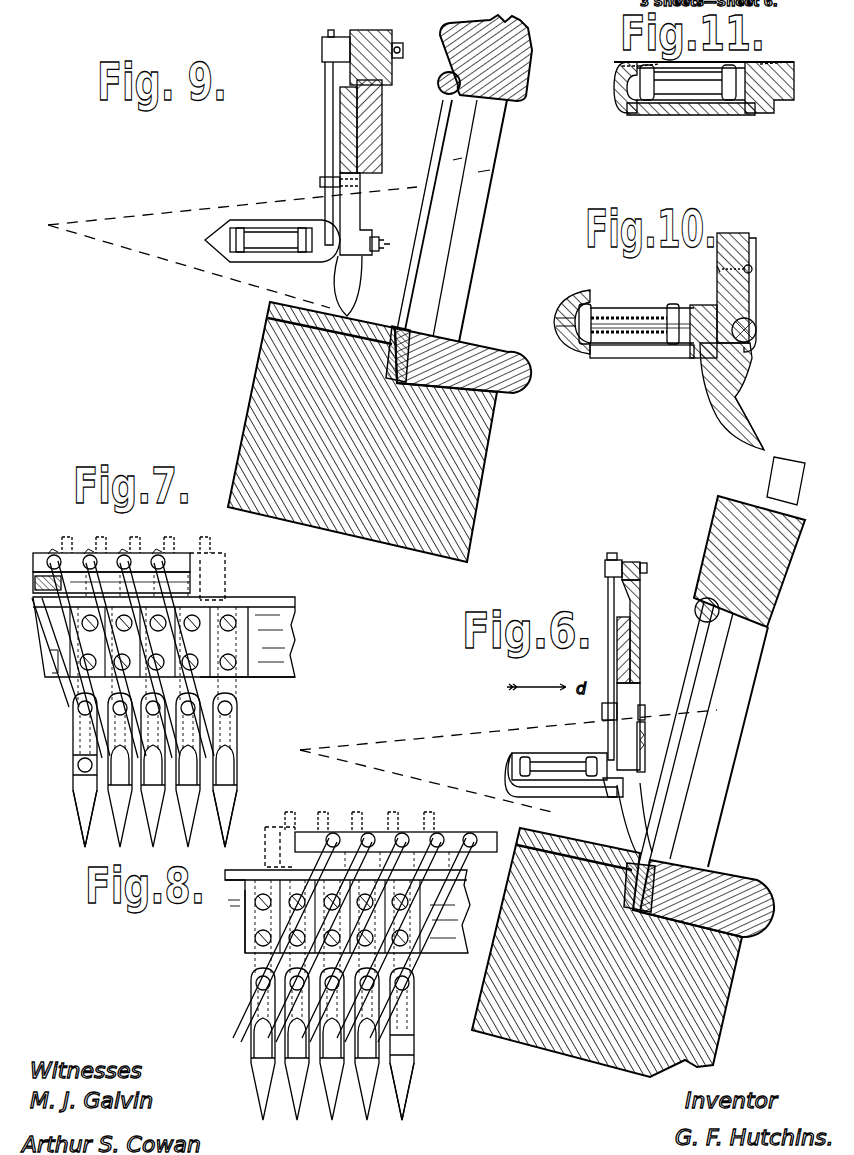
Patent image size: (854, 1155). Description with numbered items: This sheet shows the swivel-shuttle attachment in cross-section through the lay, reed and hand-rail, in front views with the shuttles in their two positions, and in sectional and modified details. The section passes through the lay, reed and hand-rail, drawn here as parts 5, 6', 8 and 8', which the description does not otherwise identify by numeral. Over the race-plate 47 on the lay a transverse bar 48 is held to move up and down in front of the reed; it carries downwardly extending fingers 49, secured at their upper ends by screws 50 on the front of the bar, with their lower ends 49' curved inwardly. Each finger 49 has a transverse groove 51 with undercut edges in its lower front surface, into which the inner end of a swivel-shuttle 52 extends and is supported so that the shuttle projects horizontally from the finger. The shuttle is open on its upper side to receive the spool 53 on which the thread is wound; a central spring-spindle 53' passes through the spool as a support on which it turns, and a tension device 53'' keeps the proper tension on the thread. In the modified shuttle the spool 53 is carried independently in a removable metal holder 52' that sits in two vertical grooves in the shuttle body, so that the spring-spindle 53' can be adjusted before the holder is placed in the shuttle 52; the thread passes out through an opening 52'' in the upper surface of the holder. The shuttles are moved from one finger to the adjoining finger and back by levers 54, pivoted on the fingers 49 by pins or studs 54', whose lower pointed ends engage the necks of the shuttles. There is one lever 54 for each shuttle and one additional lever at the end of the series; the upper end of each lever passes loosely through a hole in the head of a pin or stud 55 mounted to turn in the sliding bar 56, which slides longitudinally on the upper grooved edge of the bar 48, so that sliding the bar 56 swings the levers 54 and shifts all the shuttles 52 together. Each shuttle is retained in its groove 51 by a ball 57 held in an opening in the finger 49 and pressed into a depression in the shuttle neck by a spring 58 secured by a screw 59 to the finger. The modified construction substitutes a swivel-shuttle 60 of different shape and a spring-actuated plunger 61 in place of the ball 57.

In FIG. 9, the block 5 is at (478, 506).
In FIG. 6, the block 5 is at (712, 997).
In FIG. 9, the arm 6' is at (470, 221).
In FIG. 6, the arm 6' is at (722, 662).
In FIG. 9, the clamp head 8 is at (496, 58).
In FIG. 6, the clamp head 8 is at (746, 561).
In FIG. 9, the clamp bar 8' is at (458, 246).
In FIG. 6, the clamp bar 8' is at (699, 775).
In FIG. 9, the race-plate 47 is at (268, 306).
In FIG. 6, the race-plate 47 is at (533, 824).
In FIG. 9, the transverse bar 48 is at (383, 118).
In FIG. 7, the transverse bar 48 is at (260, 600).
In FIG. 8, the transverse bar 48 is at (268, 870).
In FIG. 6, the transverse bar 48 is at (639, 650).
In FIG. 9, the fingers 49 is at (372, 198).
In FIG. 10, the fingers 49 is at (748, 396).
In FIG. 7, the fingers 49 is at (138, 770).
In FIG. 8, the fingers 49 is at (356, 1049).
In FIG. 6, the fingers 49 is at (648, 693).
In FIG. 10, the lower ends of fingers 49' is at (764, 423).
In FIG. 7, the lower ends of fingers 49' is at (171, 823).
In FIG. 8, the lower ends of fingers 49' is at (420, 1092).
In FIG. 6, the lower ends of fingers 49' is at (639, 816).
In FIG. 7, the screws 50 is at (236, 674).
In FIG. 8, the screws 50 is at (268, 932).
In FIG. 10, the transverse grooves 51 is at (707, 357).
In FIG. 7, the transverse grooves 51 is at (73, 771).
In FIG. 8, the transverse grooves 51 is at (406, 1041).
In FIG. 6, the transverse grooves 51 is at (643, 752).
In FIG. 11, the swivel-shuttles 52 is at (704, 103).
In FIG. 10, the swivel-shuttles 52 is at (669, 351).
In FIG. 7, the swivel-shuttles 52 is at (193, 765).
In FIG. 8, the swivel-shuttles 52 is at (296, 1042).
In FIG. 6, the swivel-shuttles 52 is at (561, 784).
In FIG. 11, the removable holder 52' is at (698, 53).
In FIG. 11, the opening 52'' is at (688, 82).
In FIG. 9, the spool 53 is at (271, 256).
In FIG. 11, the spool 53 is at (691, 123).
In FIG. 10, the spool 53 is at (624, 313).
In FIG. 6, the spool 53 is at (559, 759).
In FIG. 10, the spring-spindle 53' is at (550, 330).
In FIG. 10, the tension device 53'' is at (640, 311).
In FIG. 9, the levers 54 is at (315, 153).
In FIG. 7, the levers 54 is at (155, 659).
In FIG. 8, the levers 54 is at (351, 940).
In FIG. 6, the levers 54 is at (596, 668).
In FIG. 9, the pins or studs 54' is at (325, 183).
In FIG. 7, the pins or studs 54' is at (164, 707).
In FIG. 8, the pins or studs 54' is at (339, 979).
In FIG. 6, the pins or studs 54' is at (608, 711).
In FIG. 9, the pins or studs 55 is at (335, 42).
In FIG. 7, the pins or studs 55 is at (165, 556).
In FIG. 8, the pins or studs 55 is at (337, 830).
In FIG. 6, the pins or studs 55 is at (614, 565).
In FIG. 9, the sliding bar 56 is at (386, 43).
In FIG. 7, the sliding bar 56 is at (48, 556).
In FIG. 8, the sliding bar 56 is at (333, 832).
In FIG. 6, the sliding bar 56 is at (637, 560).
In FIG. 10, the ball 57 is at (719, 298).
In FIG. 10, the spring 58 is at (757, 298).
In FIG. 10, the screw 59 is at (754, 266).
In FIG. 9, the swivel-shuttle 60 is at (297, 262).
In FIG. 9, the spring-actuated plunger 61 is at (381, 245).